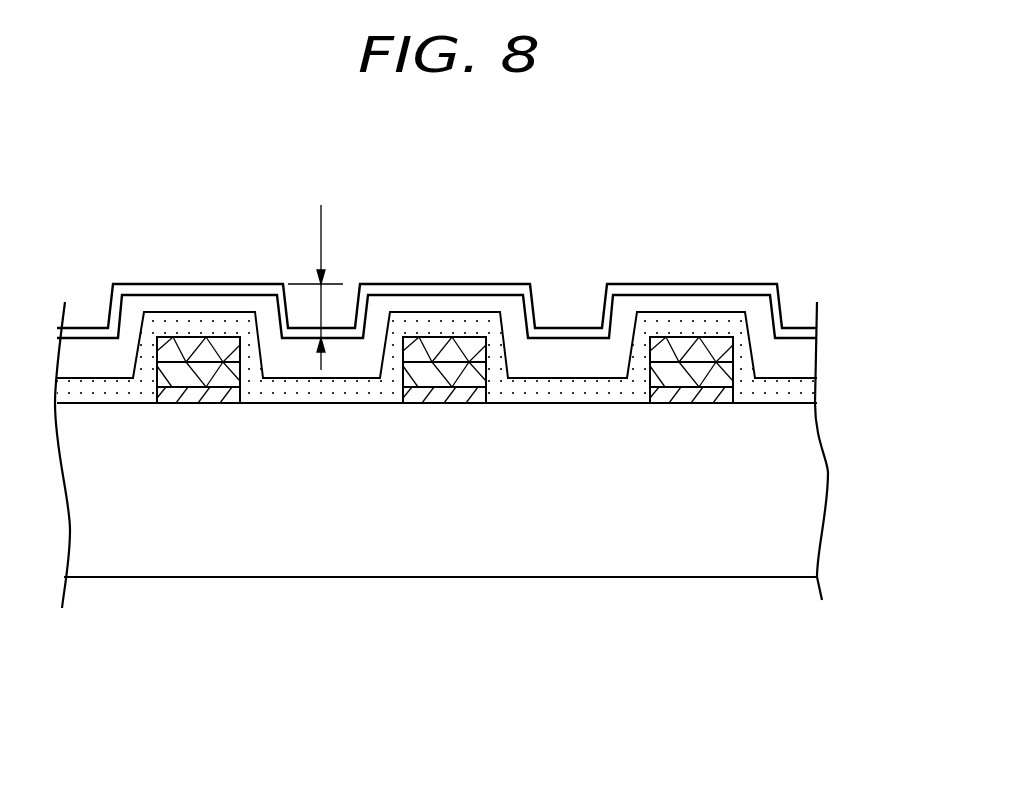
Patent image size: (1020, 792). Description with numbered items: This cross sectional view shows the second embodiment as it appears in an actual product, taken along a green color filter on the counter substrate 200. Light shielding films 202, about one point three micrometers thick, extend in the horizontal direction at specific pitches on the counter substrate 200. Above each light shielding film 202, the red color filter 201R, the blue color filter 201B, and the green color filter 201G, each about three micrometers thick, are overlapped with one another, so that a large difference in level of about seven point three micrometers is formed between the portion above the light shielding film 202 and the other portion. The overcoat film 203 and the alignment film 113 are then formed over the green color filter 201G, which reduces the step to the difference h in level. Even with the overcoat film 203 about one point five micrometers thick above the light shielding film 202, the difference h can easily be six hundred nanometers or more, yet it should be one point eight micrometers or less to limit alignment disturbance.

The alignment film 113 is at (490, 288).
The counter substrate 200 is at (492, 535).
The green color filter 201G is at (650, 323).
The blue color filter 201B is at (703, 337).
The red color filter 201R is at (763, 338).
The light shielding film 202 is at (698, 395).
The overcoat film 203 is at (413, 303).
The difference in level h is at (315, 287).